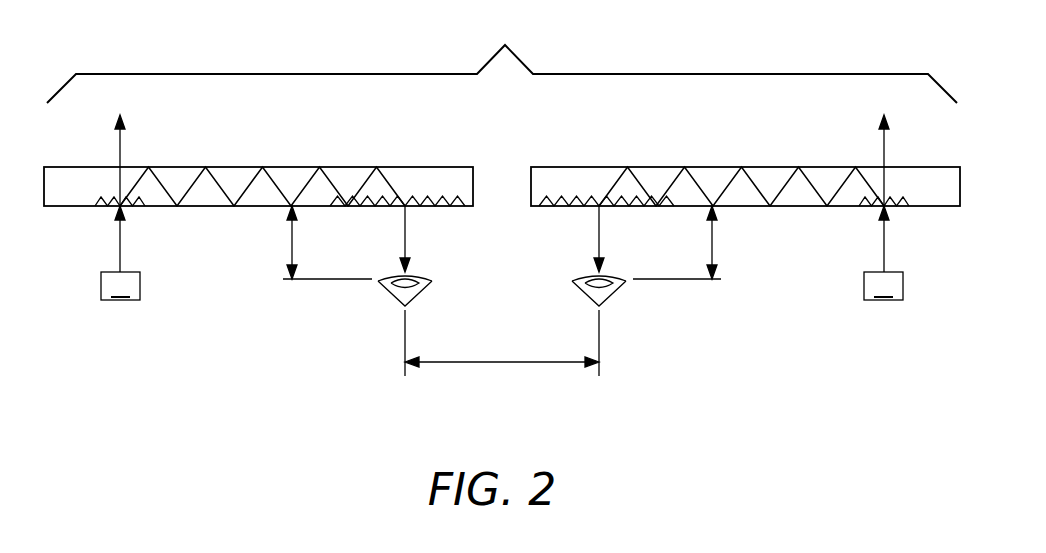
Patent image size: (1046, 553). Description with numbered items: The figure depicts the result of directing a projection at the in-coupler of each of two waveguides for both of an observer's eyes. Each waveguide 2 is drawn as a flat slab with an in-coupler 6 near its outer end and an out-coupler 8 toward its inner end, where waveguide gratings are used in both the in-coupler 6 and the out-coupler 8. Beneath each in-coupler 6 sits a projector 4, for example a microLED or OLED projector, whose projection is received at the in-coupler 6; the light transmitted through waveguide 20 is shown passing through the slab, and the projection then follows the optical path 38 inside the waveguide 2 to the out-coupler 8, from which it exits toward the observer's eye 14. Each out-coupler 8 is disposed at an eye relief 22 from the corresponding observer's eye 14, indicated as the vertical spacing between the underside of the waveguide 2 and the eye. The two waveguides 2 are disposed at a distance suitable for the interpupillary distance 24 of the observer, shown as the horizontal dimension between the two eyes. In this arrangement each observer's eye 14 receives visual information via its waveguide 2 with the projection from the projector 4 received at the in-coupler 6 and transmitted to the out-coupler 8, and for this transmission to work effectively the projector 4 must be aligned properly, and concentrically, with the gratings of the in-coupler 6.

The waveguide 2 is at (411, 167).
The optical path 38 is at (248, 178).
The out-coupler 8 is at (360, 208).
The in-coupler 6 is at (103, 208).
The light transmitted through waveguide 20 is at (119, 130).
The projector 4 is at (502, 253).
The eye relief 22 is at (289, 233).
The observer's eye 14 is at (425, 290).
The interpupillary distance 24 is at (505, 363).